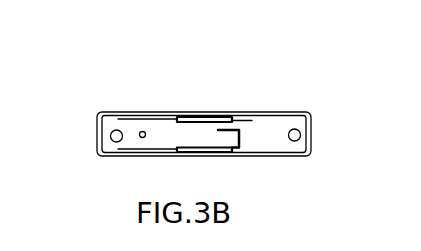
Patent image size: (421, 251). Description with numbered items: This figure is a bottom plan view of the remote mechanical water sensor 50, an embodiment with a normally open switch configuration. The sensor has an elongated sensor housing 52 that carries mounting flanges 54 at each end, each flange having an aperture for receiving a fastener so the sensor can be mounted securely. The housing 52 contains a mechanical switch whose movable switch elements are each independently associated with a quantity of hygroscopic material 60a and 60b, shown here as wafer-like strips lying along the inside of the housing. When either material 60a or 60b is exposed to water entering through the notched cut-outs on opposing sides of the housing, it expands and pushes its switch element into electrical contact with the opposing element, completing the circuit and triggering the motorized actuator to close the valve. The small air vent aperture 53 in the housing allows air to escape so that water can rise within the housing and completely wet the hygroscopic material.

The water sensor 50 is at (72, 36).
The sensor housing 52 is at (220, 111).
The air vent aperture 53 is at (168, 97).
The mounting flanges 54 is at (214, 162).
The hygroscopic material 60a is at (196, 101).
The hygroscopic material 60b is at (213, 166).